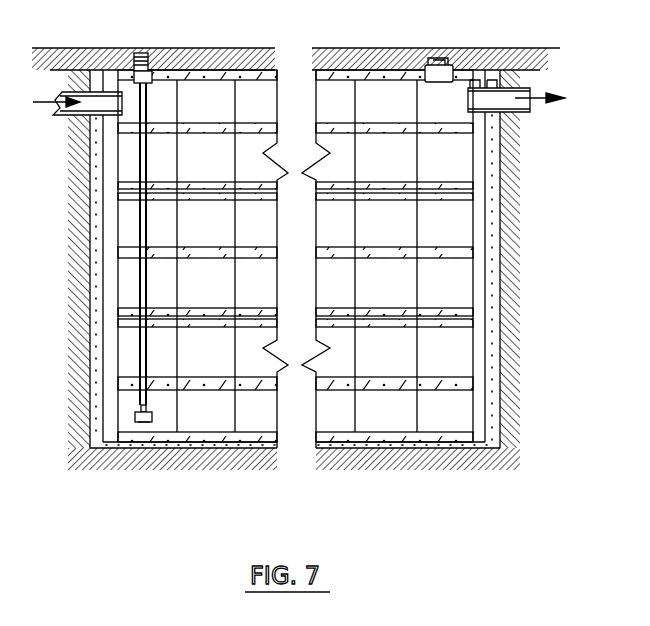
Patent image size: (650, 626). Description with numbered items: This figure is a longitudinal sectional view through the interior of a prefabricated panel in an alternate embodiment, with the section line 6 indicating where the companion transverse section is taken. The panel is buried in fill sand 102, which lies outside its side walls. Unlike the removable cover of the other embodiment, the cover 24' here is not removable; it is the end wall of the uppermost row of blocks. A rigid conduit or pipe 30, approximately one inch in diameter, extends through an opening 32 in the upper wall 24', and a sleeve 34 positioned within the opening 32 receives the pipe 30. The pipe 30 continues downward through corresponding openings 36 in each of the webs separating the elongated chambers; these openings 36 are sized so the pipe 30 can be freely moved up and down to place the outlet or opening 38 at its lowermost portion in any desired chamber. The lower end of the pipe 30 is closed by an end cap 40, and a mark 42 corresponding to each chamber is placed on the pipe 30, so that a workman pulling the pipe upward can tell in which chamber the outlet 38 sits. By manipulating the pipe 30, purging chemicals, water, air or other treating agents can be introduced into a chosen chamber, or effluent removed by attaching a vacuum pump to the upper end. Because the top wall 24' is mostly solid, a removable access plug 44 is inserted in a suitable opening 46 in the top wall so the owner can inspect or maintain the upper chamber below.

The section line 6- 6 is at (238, 520).
The cover 24' is at (290, 226).
The rigid conduit or pipe 30 is at (135, 224).
The opening 32 is at (151, 71).
The sleeve 34 is at (138, 53).
The openings 36 is at (147, 130).
The outlet or opening 38 is at (135, 417).
The end cap 40 is at (145, 423).
The mark 42 is at (147, 278).
The removable access plug 44 is at (458, 66).
The opening 46 is at (398, 65).
The fill sand 102 is at (496, 362).